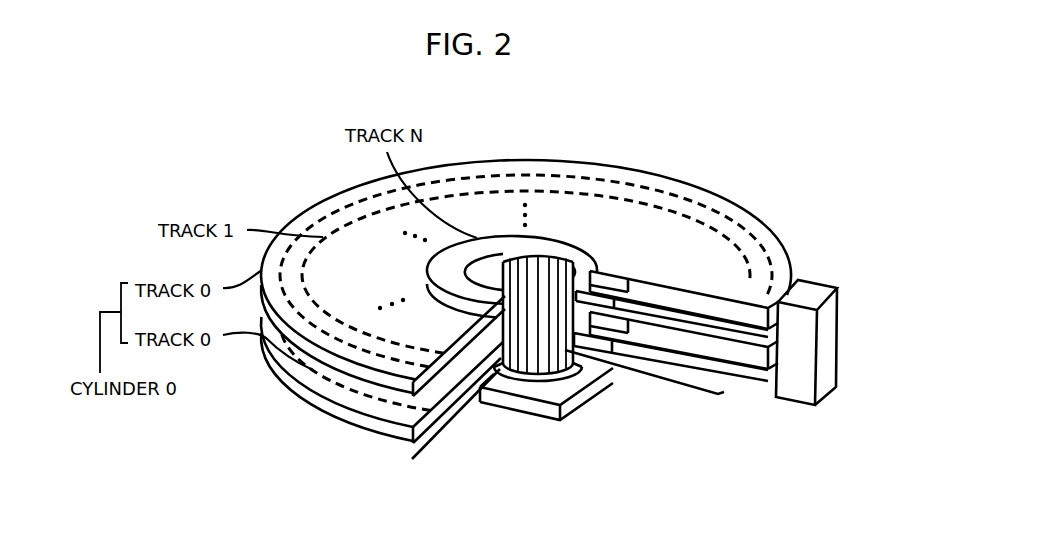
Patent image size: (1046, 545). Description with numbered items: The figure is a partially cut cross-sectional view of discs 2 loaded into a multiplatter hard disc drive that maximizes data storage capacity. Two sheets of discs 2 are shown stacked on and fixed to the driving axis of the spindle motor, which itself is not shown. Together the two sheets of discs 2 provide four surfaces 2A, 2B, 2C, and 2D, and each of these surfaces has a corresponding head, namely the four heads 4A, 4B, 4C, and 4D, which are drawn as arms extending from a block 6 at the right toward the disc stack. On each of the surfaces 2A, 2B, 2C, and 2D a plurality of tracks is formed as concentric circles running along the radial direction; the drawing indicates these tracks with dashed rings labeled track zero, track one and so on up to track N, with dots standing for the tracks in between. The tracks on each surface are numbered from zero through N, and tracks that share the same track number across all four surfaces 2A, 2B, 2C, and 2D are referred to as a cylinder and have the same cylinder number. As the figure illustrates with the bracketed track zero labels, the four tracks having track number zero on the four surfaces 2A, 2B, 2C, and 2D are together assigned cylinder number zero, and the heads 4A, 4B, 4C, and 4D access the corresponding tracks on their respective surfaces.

The discs 2 is at (704, 191).
The surface 2A is at (486, 360).
The surface 2B is at (477, 332).
The surface 2C is at (481, 380).
The surface 2D is at (475, 306).
The head 4A is at (593, 293).
The head 4B is at (613, 309).
The head 4C is at (657, 319).
The head 4D is at (672, 335).
The actuator / head arm block 6 is at (827, 342).